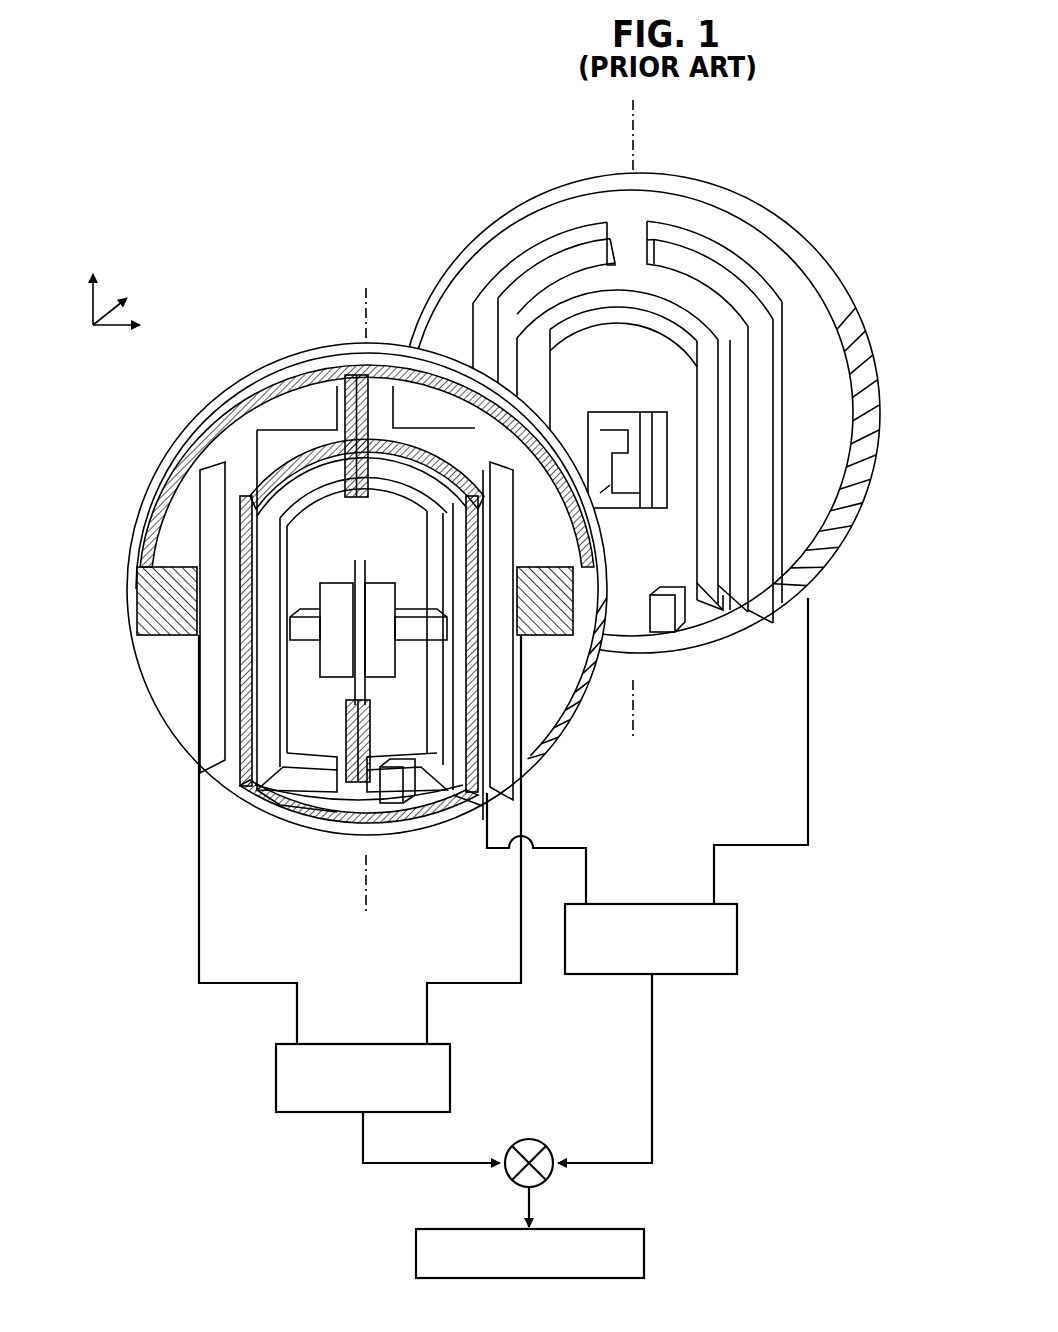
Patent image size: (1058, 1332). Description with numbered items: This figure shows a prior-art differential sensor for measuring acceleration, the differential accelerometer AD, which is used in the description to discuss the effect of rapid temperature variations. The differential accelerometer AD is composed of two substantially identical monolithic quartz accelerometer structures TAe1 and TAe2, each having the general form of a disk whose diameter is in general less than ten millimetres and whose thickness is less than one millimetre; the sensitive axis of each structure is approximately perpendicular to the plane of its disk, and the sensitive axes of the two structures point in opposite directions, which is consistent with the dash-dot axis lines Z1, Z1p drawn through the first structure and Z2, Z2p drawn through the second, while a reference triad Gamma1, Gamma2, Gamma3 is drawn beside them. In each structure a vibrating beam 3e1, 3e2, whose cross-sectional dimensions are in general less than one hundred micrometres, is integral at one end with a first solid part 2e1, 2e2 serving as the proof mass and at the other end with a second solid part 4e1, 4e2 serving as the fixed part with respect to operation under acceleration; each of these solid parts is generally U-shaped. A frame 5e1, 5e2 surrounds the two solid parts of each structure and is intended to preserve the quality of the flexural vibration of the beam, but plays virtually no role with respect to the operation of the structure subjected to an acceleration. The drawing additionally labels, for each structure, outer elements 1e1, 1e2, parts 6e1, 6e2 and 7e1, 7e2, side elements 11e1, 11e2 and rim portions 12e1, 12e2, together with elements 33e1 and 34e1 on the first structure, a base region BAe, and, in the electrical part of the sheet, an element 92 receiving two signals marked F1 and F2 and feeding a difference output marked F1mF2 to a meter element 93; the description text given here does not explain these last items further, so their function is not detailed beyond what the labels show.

The differential accelerometer AD is at (266, 148).
The monolithic quartz accelerometer structure TAe1 is at (209, 331).
The monolithic quartz accelerometer structure TAe2 is at (455, 160).
The housing of first sensor 1e1 is at (330, 343).
The housing of second sensor 1e2 is at (480, 236).
The first solid part 2e1 is at (357, 480).
The first solid part 2e2 is at (613, 320).
The vibrating beam 3e1 is at (370, 628).
The vibrating beam 3e2 is at (630, 440).
The second solid part 4e1 is at (432, 735).
The second solid part 4e2 is at (722, 618).
The frame 5e1 is at (412, 838).
The frame 5e2 is at (708, 660).
The mass member of first sensor 6e1 is at (388, 782).
The mass member of second sensor 6e2 is at (660, 607).
The connecting post of first sensor 7e1 is at (337, 418).
The connecting post of second sensor 7e2 is at (613, 243).
The side plate of first sensor 11e1 is at (177, 717).
The side plate of second sensor 11e2 is at (443, 330).
The rim of first sensor 12e1 is at (580, 697).
The rim of second sensor 12e2 is at (822, 577).
The left terminal block 33e1 is at (158, 637).
The right terminal block 34e1 is at (525, 742).
The base BAe is at (642, 812).
The mixer 92 is at (527, 1139).
The frequency meter 93 is at (644, 1256).
The first output frequency F1 is at (362, 1135).
The second output frequency F2 is at (652, 1118).
The difference frequency (F1-F2) F1mF2 is at (540, 1190).
The axis of first sensor Z1 is at (382, 315).
The axis of first sensor (lower, Z1') Z1p is at (389, 888).
The axis of second sensor Z2 is at (653, 130).
The axis of second sensor (lower, Z2') Z2p is at (653, 710).
The first axis Gamma1 is at (122, 297).
The second axis Gamma2 is at (92, 283).
The third axis Gamma3 is at (132, 326).